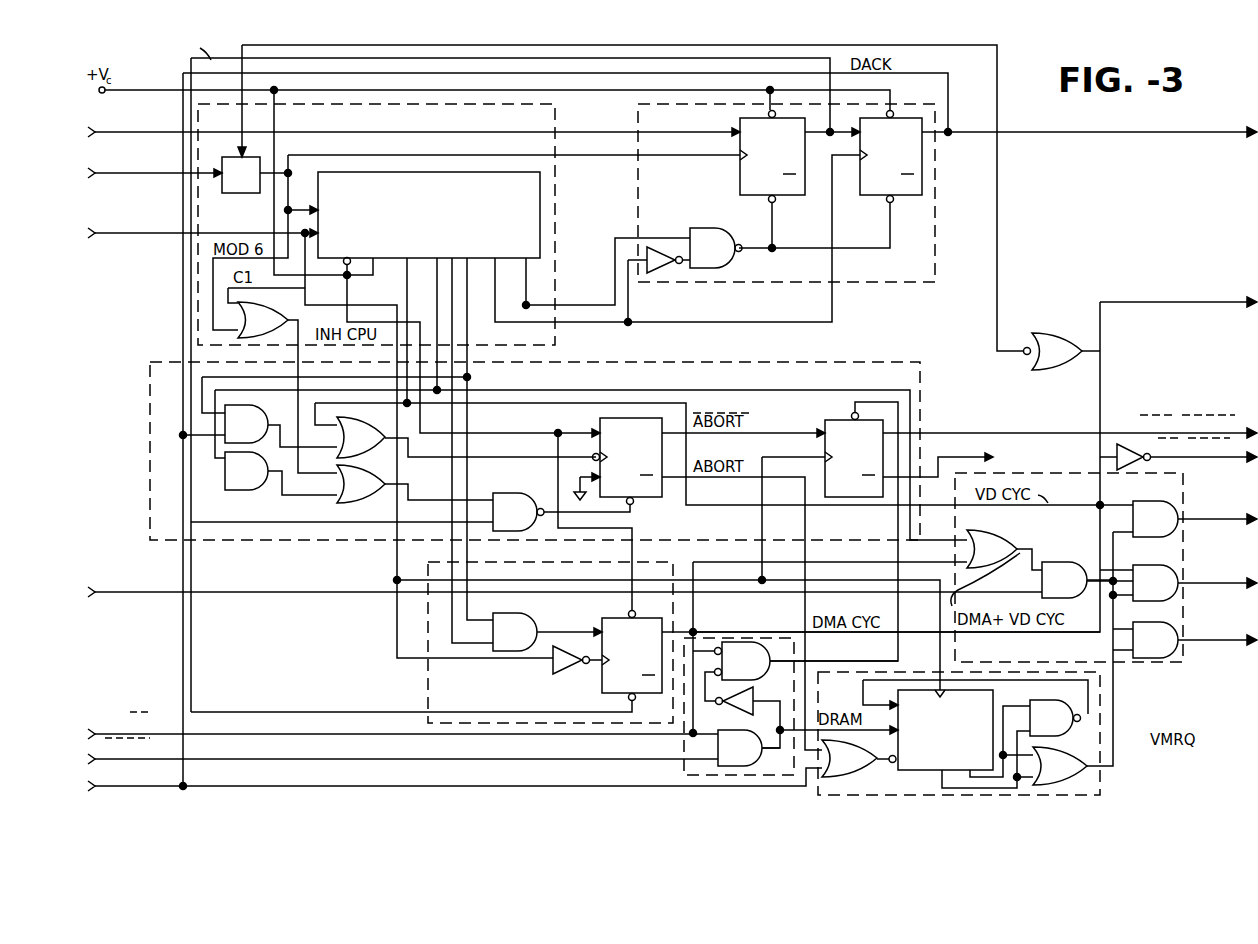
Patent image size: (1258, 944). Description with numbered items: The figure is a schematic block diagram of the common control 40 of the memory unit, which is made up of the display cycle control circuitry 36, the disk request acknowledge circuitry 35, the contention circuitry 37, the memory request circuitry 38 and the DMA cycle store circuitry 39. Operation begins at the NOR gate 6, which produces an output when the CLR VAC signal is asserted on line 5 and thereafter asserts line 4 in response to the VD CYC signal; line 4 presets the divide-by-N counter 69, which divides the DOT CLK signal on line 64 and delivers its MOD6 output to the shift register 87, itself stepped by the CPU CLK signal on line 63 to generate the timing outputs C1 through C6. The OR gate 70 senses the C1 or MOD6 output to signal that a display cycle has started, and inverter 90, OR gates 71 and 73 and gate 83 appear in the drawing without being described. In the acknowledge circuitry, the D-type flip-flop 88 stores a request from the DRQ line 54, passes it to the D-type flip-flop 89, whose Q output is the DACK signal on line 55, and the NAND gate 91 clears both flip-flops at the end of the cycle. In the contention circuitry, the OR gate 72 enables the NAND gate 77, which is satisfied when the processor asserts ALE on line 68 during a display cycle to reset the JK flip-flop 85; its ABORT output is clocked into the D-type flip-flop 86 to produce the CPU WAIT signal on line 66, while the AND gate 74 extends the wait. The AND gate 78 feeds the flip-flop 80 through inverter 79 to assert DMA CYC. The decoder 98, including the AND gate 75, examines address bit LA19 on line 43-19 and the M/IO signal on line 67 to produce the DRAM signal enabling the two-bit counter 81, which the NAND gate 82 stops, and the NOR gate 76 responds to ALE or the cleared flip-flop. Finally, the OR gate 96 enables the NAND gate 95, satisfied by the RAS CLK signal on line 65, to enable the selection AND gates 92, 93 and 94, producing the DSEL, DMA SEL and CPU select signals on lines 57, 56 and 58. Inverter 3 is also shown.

The inverter 3 is at (1135, 452).
The line 4 is at (997, 278).
The CLR VAC line 5 is at (1176, 302).
The NOR gate 6 is at (1062, 333).
The disk request acknowledge circuitry 35 is at (862, 282).
The display cycle control circuitry 36 is at (555, 172).
The contention circuitry 37 is at (920, 408).
The memory request circuitry 38 is at (1100, 786).
The DMA cycle store circuitry 39 is at (428, 684).
The common control 40 is at (1128, 203).
The line 43-19 is at (232, 758).
The DRQ line 54 is at (160, 132).
The DACK line 55 is at (1072, 132).
The DMA SEL line 56 is at (1212, 583).
The DSEL line 57 is at (1208, 519).
The CPU select line 58 is at (1212, 640).
The CPU CLK line 63 is at (160, 240).
The DOT CLK line 64 is at (160, 173).
The RAS CLK line 65 is at (150, 592).
The CPU WAIT line 66 is at (1065, 433).
The M/IO line 67 is at (230, 732).
The ALE line 68 is at (230, 784).
The divide-by-N counter 69 is at (240, 193).
The OR gate 70 is at (260, 306).
The OR gate 71 is at (348, 424).
The OR gate 72 is at (352, 502).
The AND gate 73 is at (256, 416).
The AND gate 74 is at (242, 490).
The AND gate 75 is at (752, 758).
The NOR gate 76 is at (854, 772).
The NAND gate 77 is at (518, 493).
The AND gate 78 is at (528, 622).
The inverter 79 is at (560, 672).
The flip-flop 80 is at (602, 686).
The 2-bit counter 81 is at (922, 770).
The NAND gate 82 is at (1048, 700).
The OR gate 83 is at (1060, 750).
The JK flip-flop 85 is at (638, 497).
The D-type flip-flop 86 is at (835, 420).
The shift register 87 is at (410, 172).
The D-type flip-flop 88 is at (740, 178).
The D-type flip-flop 89 is at (878, 192).
The inverter 90 is at (660, 272).
The NAND gate 91 is at (738, 258).
The selection AND gate 92 is at (1136, 502).
The selection AND gate 93 is at (1164, 565).
The selection AND gate 94 is at (1148, 626).
The NAND gate 95 is at (1060, 568).
The OR gate 96 is at (992, 526).
The decoder 98 is at (738, 642).